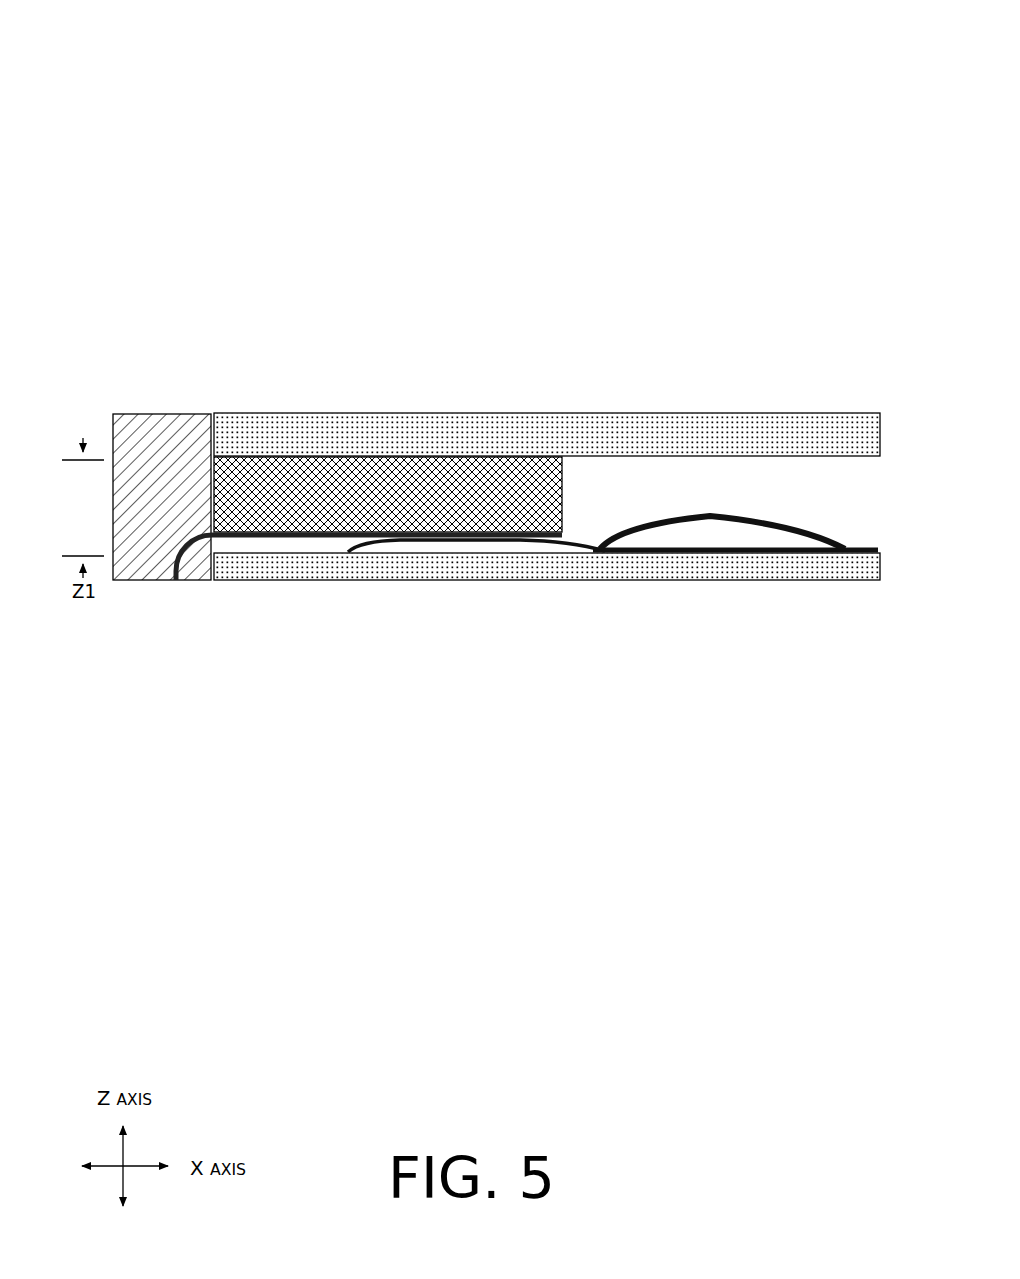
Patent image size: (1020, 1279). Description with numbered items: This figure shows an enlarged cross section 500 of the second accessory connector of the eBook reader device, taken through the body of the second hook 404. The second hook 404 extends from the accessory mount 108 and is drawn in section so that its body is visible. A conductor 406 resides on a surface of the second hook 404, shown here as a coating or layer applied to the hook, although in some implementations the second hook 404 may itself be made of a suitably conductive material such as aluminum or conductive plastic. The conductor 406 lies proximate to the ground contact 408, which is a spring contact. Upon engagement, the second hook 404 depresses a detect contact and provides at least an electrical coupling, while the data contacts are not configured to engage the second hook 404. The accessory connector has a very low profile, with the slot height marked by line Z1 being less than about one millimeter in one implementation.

The accessory mount assembly 500 is at (772, 49).
The accessory mount 108 is at (149, 425).
The second hook 404 is at (378, 508).
The conductor 406 is at (333, 537).
The ground contact 408 is at (562, 540).